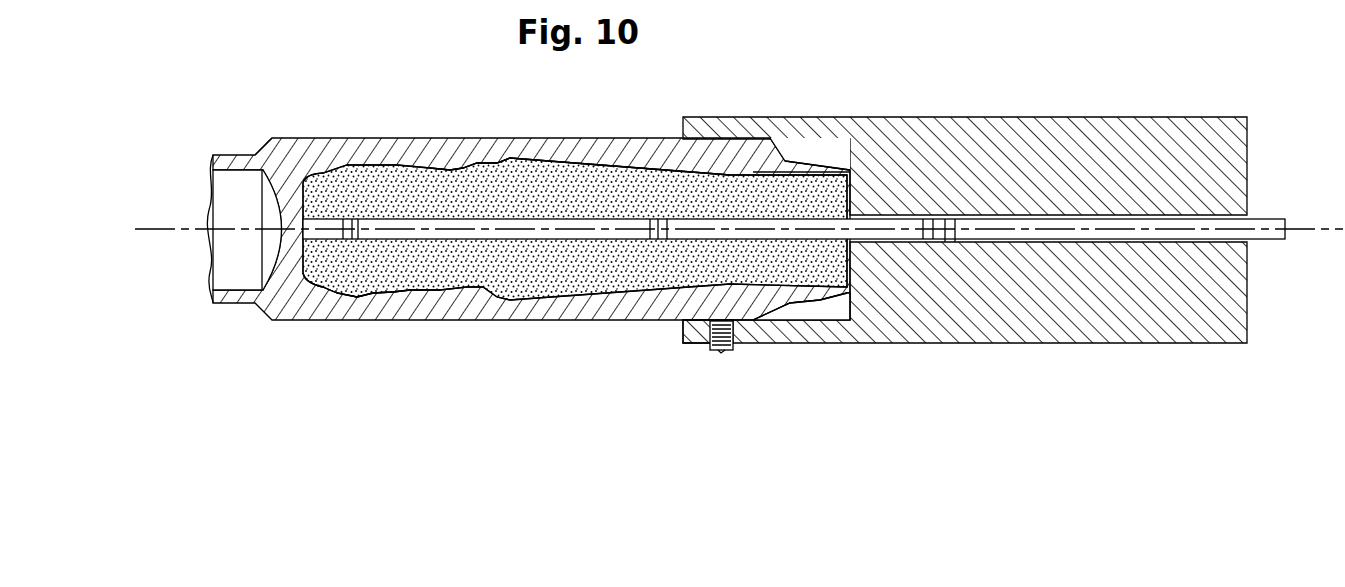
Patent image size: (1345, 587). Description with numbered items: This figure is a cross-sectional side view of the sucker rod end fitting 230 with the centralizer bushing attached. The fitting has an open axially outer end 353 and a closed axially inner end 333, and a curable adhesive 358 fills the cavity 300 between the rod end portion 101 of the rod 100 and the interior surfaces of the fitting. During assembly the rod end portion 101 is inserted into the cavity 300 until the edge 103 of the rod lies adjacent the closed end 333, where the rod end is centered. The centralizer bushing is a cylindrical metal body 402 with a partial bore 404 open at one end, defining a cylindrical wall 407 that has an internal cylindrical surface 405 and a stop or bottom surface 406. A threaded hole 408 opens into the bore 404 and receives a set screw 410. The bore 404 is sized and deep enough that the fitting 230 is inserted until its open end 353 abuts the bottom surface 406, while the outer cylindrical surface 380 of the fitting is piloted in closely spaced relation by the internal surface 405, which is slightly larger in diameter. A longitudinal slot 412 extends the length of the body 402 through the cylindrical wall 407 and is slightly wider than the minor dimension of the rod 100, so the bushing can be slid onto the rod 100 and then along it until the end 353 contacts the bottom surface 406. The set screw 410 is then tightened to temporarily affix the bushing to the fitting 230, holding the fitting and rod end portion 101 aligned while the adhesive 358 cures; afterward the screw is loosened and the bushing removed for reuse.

The sucker rod 100 is at (1265, 209).
The rod end portion 101 is at (463, 208).
The edge of rod end portion 103 is at (280, 200).
The sucker rod end fitting 230 is at (283, 131).
The cavity 300 is at (616, 177).
The closed axially inner end 333 is at (335, 274).
The open axially outer end 353 is at (876, 313).
The curable adhesive 358 is at (563, 197).
The outer cylindrical surface 380 is at (424, 140).
The cylindrical metal body 402 is at (1002, 117).
The partial bore 404 is at (818, 310).
The internal cylindrical surface 405 is at (808, 142).
The stop or bottom surface 406 is at (840, 152).
The cylindrical wall 407 is at (683, 332).
The threaded hole 408 is at (683, 323).
The set screw 410 is at (730, 352).
The longitudinal slot 412 is at (975, 240).